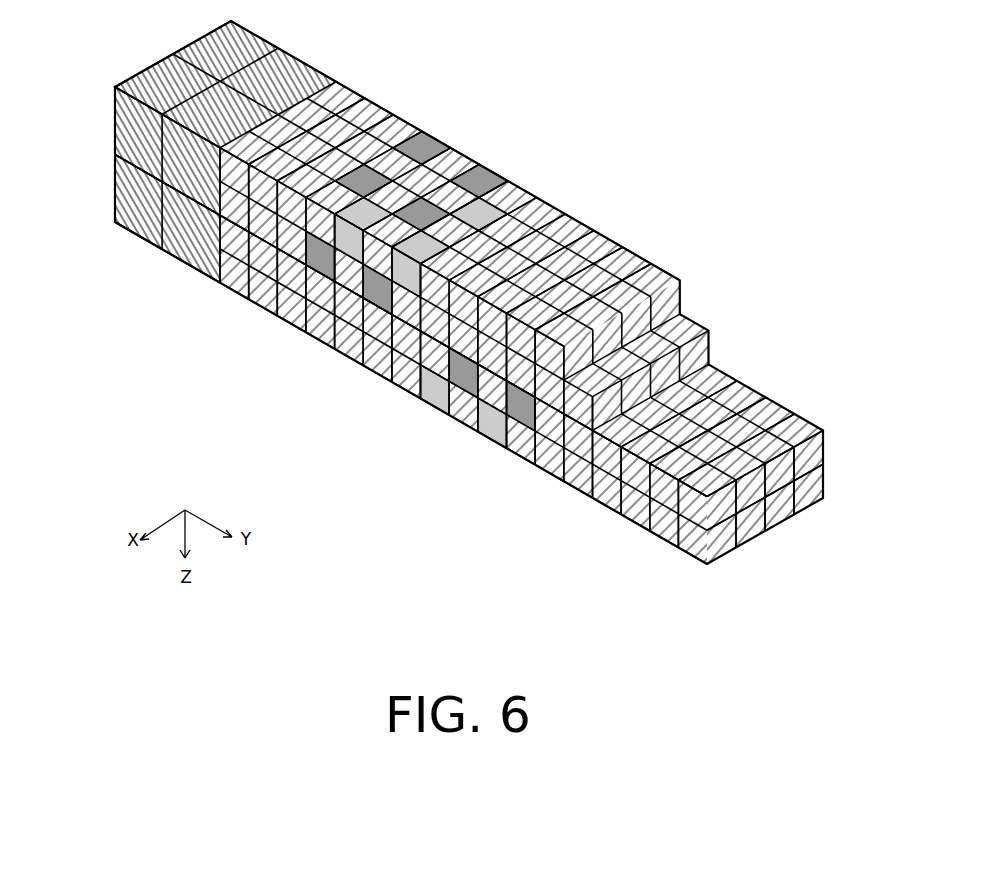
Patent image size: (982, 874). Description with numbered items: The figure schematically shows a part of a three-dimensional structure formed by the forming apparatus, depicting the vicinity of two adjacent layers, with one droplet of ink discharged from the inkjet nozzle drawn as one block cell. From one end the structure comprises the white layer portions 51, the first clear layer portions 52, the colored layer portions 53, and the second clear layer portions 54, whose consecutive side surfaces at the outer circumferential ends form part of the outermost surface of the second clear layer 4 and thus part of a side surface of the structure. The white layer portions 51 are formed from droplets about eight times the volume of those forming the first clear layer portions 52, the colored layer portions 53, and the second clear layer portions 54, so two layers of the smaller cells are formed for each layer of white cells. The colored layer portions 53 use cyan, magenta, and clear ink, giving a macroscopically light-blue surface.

The second clear layer 4 is at (797, 298).
The white layer portions 51 is at (237, 12).
The first clear layer portions 52 is at (344, 78).
The colored layer portions 53 is at (432, 124).
The second clear layer portions 54 is at (547, 194).